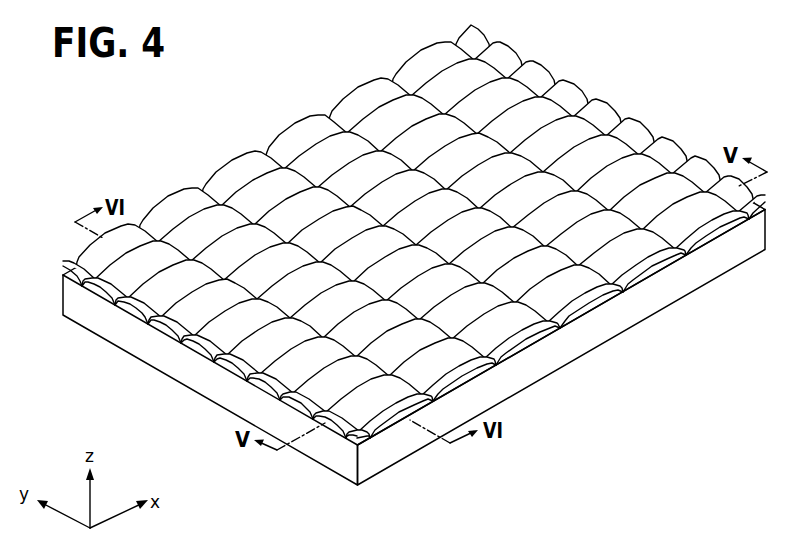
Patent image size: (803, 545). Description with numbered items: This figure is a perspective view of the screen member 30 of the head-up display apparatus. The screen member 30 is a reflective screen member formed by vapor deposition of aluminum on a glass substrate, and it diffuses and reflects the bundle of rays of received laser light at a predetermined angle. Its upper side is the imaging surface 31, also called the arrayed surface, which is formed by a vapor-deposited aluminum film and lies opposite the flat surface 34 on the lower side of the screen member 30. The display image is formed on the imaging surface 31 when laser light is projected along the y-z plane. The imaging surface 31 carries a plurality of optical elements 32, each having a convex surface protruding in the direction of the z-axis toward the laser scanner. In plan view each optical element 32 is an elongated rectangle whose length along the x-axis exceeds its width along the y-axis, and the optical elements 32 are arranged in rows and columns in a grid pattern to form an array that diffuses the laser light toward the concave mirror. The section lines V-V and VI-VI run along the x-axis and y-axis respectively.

The screen member 30 is at (527, 392).
The imaging surface 31 is at (517, 197).
The optical element 32 is at (198, 228).
The flat surface 34 is at (674, 305).